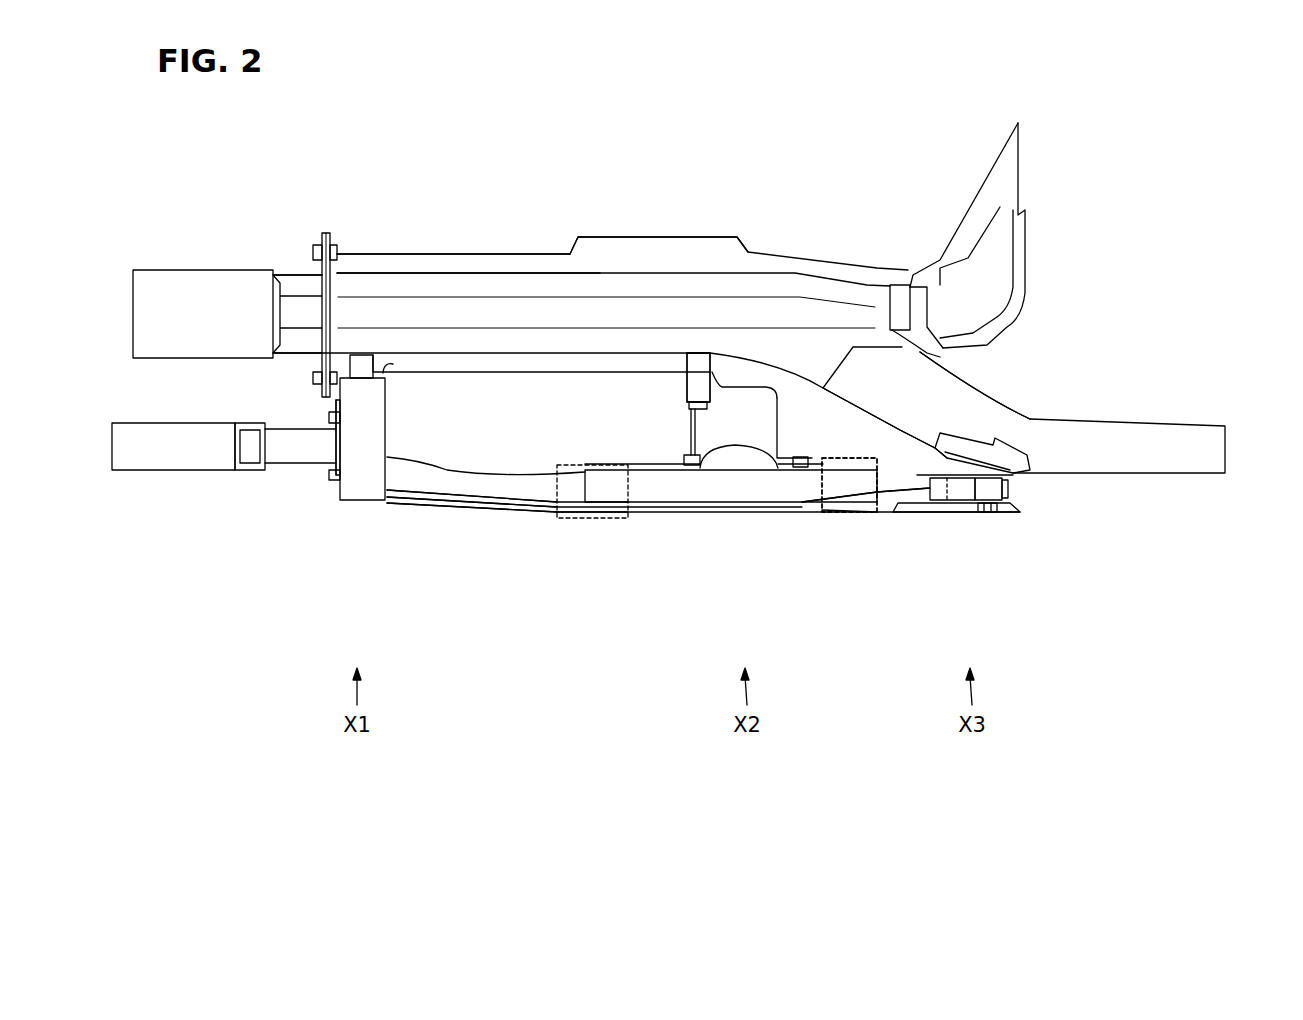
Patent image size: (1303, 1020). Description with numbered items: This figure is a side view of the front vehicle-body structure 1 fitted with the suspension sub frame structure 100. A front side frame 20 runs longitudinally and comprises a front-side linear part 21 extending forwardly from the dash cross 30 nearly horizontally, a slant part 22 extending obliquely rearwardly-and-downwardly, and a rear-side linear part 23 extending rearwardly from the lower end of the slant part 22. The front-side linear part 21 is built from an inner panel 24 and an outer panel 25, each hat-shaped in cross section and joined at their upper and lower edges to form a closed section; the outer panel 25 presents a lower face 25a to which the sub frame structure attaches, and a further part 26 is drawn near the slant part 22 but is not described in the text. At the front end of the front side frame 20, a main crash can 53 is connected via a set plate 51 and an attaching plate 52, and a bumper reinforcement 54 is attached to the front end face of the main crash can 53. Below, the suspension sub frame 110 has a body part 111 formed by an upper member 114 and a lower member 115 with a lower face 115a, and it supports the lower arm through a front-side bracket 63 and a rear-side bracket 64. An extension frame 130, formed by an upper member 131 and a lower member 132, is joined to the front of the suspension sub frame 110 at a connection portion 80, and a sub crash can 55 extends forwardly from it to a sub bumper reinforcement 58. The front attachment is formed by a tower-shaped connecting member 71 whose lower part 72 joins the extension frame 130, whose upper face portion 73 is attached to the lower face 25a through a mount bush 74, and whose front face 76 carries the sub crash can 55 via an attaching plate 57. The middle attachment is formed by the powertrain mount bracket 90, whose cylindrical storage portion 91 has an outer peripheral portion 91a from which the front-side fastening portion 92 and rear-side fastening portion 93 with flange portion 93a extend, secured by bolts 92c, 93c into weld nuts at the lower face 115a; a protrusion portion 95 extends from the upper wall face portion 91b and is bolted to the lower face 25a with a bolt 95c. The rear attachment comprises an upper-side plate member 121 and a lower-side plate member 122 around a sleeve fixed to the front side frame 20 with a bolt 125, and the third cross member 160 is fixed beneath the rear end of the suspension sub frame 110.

The front vehicle-body structure 1 is at (1062, 70).
The front side frame 20 is at (758, 218).
The front-side linear part 21 is at (533, 190).
The slant part 22 is at (985, 397).
The rear-side linear part 23 is at (1150, 436).
The inner panel 24 is at (645, 237).
The outer panel 25 is at (552, 280).
The lower face of the outer panel 25a is at (481, 357).
The connecting member 26 is at (1012, 450).
The dash cross 30 is at (1005, 146).
The set plate 51 is at (331, 242).
The attaching plate 52 is at (316, 246).
The main crash can 53 is at (288, 284).
The bumper reinforcement 54 is at (178, 282).
The sub crash can 55 is at (288, 456).
The attaching plate 57 is at (333, 480).
The sub bumper reinforcement 58 is at (176, 456).
The front-side bracket 63 is at (568, 522).
The rear-side bracket 64 is at (850, 514).
The connecting member 71 is at (370, 502).
The lower part of the connecting member 72 is at (398, 498).
The upper face portion 73 is at (389, 368).
The mount bush 74 is at (362, 355).
The front face of the connecting member 76 is at (338, 500).
The connection portion 80 is at (603, 521).
The powertrain mount bracket 90 is at (680, 405).
The storage portion 91 is at (690, 432).
The outer peripheral portion 91a is at (782, 431).
The upper wall face portion 91b is at (768, 389).
The front-side fastening portion 92 is at (660, 465).
The bolt 92c is at (688, 456).
The rear-side fastening portion 93 is at (800, 484).
The flange portion 93a is at (866, 495).
The bolt 93c is at (830, 460).
The protrusion portion 95 is at (690, 380).
The bolt 95c is at (692, 421).
The suspension sub frame structure 100 is at (957, 562).
The suspension sub frame 110 is at (713, 512).
The body part 111 is at (715, 624).
The upper member 114 is at (652, 484).
The lower member 115 is at (643, 514).
The lower face 115a is at (763, 514).
The upper-side plate member 121 is at (925, 530).
The lower-side plate member 122 is at (930, 502).
The bolt 125 is at (990, 506).
The extension frame 130 is at (540, 578).
The upper member 131 is at (510, 492).
The lower member 132 is at (470, 508).
The third cross member 160 is at (1000, 512).